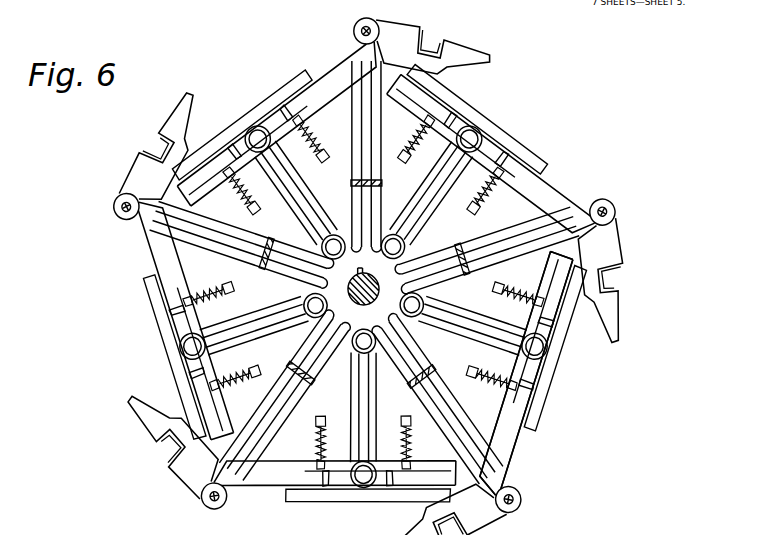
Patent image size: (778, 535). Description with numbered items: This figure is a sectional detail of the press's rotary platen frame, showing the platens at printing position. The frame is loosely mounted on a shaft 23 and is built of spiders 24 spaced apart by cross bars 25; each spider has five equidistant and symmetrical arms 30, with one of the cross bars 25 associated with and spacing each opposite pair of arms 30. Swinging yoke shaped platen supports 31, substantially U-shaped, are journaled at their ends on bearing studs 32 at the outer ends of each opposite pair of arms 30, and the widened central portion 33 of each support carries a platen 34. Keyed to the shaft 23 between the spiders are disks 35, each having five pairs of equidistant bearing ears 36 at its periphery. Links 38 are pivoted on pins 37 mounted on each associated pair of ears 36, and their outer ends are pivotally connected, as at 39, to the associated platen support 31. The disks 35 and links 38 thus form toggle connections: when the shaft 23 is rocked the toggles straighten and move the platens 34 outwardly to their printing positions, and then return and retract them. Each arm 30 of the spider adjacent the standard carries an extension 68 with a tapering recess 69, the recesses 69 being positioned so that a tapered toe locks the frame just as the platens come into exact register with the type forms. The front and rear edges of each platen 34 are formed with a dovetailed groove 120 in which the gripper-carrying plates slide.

The shaft 23 is at (382, 220).
The spiders 24 is at (410, 262).
The cross bars 25 is at (535, 222).
The arms 30 is at (488, 262).
The platen supports 31 is at (343, 76).
The bearing studs 32 is at (113, 205).
The widened central portion 33 is at (478, 118).
The platen 34 is at (265, 103).
The disks 35 is at (355, 184).
The bearing ears 36 is at (342, 330).
The pins 37 is at (312, 298).
The links 38 is at (433, 208).
The pivotal connection 39 is at (180, 348).
The extension 68 is at (142, 156).
The tapering recess 69 is at (160, 135).
The dovetailed groove 120 is at (200, 143).